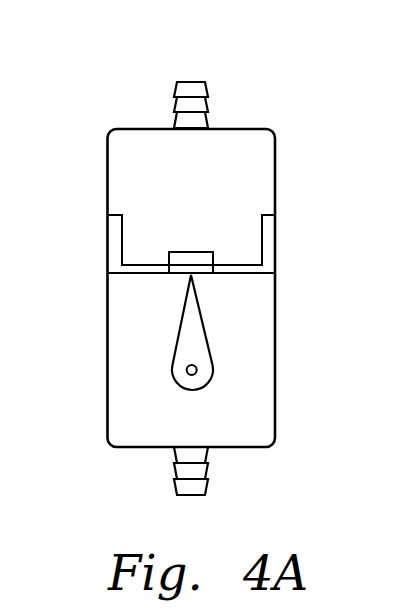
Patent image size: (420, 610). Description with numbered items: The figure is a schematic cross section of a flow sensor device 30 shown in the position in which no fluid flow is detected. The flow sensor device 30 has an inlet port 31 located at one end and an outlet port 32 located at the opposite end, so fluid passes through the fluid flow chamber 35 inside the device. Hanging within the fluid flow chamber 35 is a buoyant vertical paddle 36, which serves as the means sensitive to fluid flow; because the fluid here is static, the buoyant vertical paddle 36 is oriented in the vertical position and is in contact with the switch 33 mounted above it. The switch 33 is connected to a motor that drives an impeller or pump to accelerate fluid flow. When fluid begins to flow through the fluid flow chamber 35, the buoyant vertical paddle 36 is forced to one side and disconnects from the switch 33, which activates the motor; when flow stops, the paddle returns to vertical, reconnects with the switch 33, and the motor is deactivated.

The flow sensor device 30 is at (275, 333).
The inlet port 31 is at (207, 86).
The outlet port 32 is at (208, 471).
The switch 33 is at (198, 257).
The fluid flow chamber 35 is at (145, 360).
The buoyant vertical paddle 36 is at (175, 340).